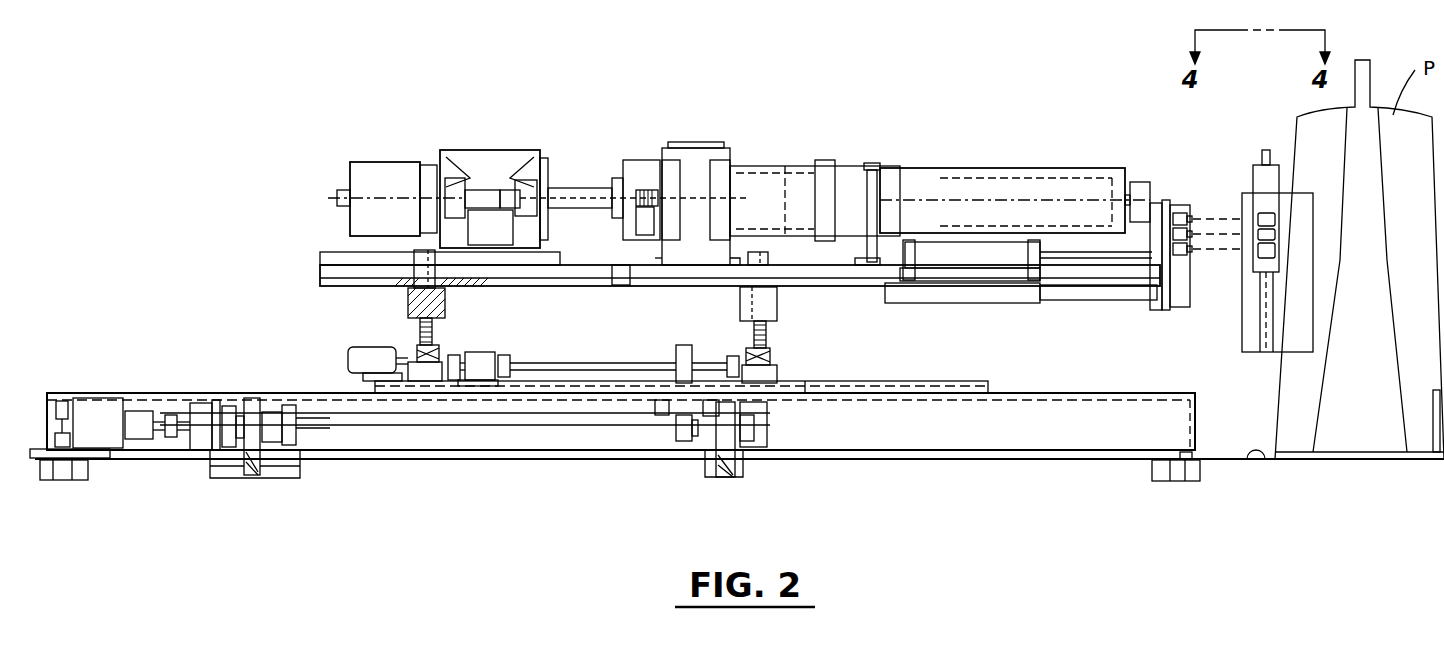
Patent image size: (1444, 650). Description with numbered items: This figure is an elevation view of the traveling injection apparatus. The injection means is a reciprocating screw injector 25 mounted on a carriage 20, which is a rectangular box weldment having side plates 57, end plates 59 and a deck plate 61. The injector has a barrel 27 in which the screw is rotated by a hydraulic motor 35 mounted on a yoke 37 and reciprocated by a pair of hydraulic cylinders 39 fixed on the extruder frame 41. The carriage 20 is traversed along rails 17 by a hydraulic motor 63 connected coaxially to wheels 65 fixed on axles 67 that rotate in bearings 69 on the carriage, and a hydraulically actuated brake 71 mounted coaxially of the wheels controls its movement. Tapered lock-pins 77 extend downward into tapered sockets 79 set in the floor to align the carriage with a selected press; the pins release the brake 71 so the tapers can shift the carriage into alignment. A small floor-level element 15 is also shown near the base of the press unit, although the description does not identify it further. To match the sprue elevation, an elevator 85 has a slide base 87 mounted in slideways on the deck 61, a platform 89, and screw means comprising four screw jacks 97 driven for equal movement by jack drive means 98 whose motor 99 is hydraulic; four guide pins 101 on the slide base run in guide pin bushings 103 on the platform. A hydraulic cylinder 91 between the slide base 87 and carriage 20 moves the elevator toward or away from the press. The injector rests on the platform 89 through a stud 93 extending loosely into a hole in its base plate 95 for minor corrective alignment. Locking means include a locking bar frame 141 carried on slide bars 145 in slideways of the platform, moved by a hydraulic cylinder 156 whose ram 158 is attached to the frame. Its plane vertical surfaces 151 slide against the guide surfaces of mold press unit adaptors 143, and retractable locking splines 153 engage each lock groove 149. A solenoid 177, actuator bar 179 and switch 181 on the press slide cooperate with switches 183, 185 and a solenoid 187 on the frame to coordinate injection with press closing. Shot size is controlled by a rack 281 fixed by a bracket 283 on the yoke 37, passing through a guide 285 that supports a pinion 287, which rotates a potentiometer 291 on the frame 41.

The bump stop 15 is at (1258, 458).
The rails 17 is at (243, 470).
The carriage 20 is at (838, 432).
The reciprocating screw injector 25 is at (770, 160).
The barrel 27 is at (915, 178).
The hydraulic motor 35 is at (385, 162).
The yoke 37 is at (495, 152).
The hydraulic cylinders 39 is at (792, 180).
The extruder frame 41 is at (728, 152).
The side plates 57 is at (1047, 437).
The end plates 59 is at (55, 408).
The deck plate 61 is at (202, 398).
The hydraulic motor 63 is at (100, 408).
The wheels 65 is at (268, 442).
The axles 67 is at (286, 418).
The bearings 69 is at (228, 432).
The hydraulically actuated brake 71 is at (195, 412).
The tapered lock-pins 77 is at (85, 456).
The tapered sockets 79 is at (65, 478).
The elevator 85 is at (784, 340).
The slide base 87 is at (795, 390).
The platform 89 is at (583, 283).
The hydraulic cylinder 91 is at (560, 408).
The stud 93 is at (630, 284).
The base plate 95 is at (320, 260).
The screw jacks 97 is at (420, 332).
The jack drive means 98 is at (557, 362).
The motor 99 is at (348, 358).
The guide pins 101 is at (425, 275).
The guide pin bushings 103 is at (445, 303).
The locking bar frame 141 is at (1157, 312).
The mold press unit adaptors 143 is at (1278, 330).
The slide bars 145 is at (990, 304).
The lock groove 149 is at (1262, 325).
The plane vertical surfaces 151 is at (1182, 296).
The retractable locking splines 153 is at (1165, 205).
The hydraulic cylinder 156 is at (972, 250).
The ram 158 is at (1120, 258).
The solenoid 177 is at (1265, 217).
The actuator bar 179 is at (1272, 233).
The switch 181 is at (1275, 252).
The switch 183 is at (1180, 216).
The switch 185 is at (1185, 234).
The solenoid 187 is at (1185, 252).
The rack 281 is at (695, 200).
The bracket 283 is at (483, 195).
The guide 285 is at (640, 188).
The pinion 287 is at (656, 210).
The potentiometer 291 is at (620, 205).